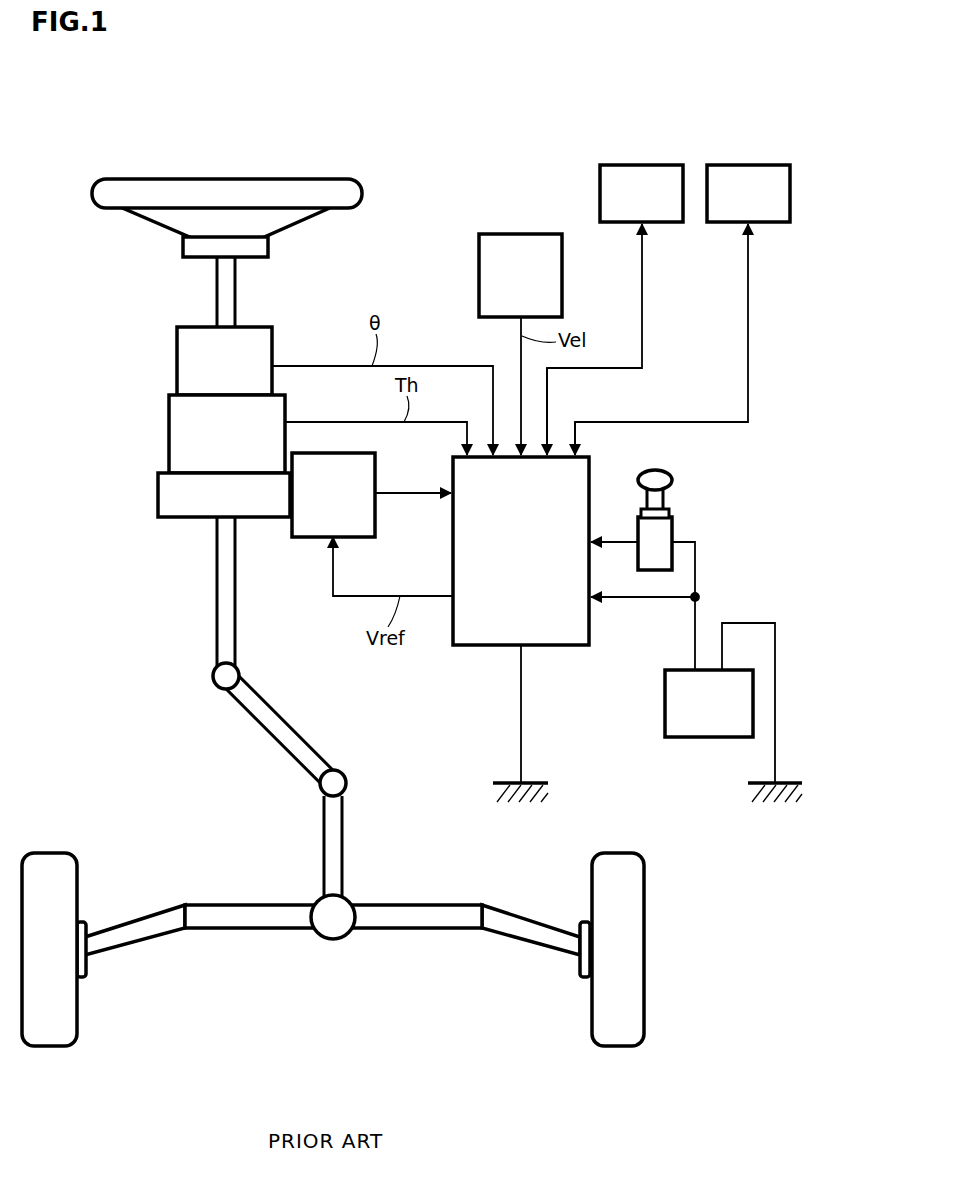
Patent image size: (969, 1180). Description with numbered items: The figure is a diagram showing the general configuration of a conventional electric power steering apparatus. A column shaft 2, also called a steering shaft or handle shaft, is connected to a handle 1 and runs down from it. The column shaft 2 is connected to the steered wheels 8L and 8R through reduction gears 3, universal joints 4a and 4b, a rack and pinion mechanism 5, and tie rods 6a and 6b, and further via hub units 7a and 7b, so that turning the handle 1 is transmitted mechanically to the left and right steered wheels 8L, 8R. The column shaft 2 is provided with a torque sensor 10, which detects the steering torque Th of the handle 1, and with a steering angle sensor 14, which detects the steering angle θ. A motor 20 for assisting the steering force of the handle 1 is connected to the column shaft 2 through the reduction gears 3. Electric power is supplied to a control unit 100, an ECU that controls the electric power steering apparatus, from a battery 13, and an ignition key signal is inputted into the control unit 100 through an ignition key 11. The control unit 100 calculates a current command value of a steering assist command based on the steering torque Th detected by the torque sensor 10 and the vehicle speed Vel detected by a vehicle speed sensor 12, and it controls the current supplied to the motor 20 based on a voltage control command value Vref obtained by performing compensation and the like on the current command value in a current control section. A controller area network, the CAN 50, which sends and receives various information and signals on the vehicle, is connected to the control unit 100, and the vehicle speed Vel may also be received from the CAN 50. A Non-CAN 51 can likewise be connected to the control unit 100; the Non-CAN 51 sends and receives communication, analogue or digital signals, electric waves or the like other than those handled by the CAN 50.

The handle 1 is at (362, 190).
The column shaft 2 is at (216, 302).
The reduction gears 3 is at (158, 502).
The universal joint 4a is at (213, 684).
The universal joint 4b is at (320, 790).
The rack and pinion mechanism 5 is at (350, 900).
The tie rod 6a is at (114, 917).
The tie rod 6b is at (516, 917).
The hub unit 7a is at (86, 975).
The hub unit 7b is at (580, 975).
The steered wheel 8L is at (77, 1038).
The steered wheel 8R is at (592, 1038).
The torque sensor 10 is at (169, 428).
The ignition key 11 is at (672, 480).
The vehicle speed sensor 12 is at (562, 246).
The battery 13 is at (665, 698).
The steering angle sensor 14 is at (177, 362).
The motor 20 is at (375, 460).
The controller area network (CAN) 50 is at (776, 165).
The Non-CAN 51 is at (668, 165).
The control unit (ECU) 100 is at (589, 460).